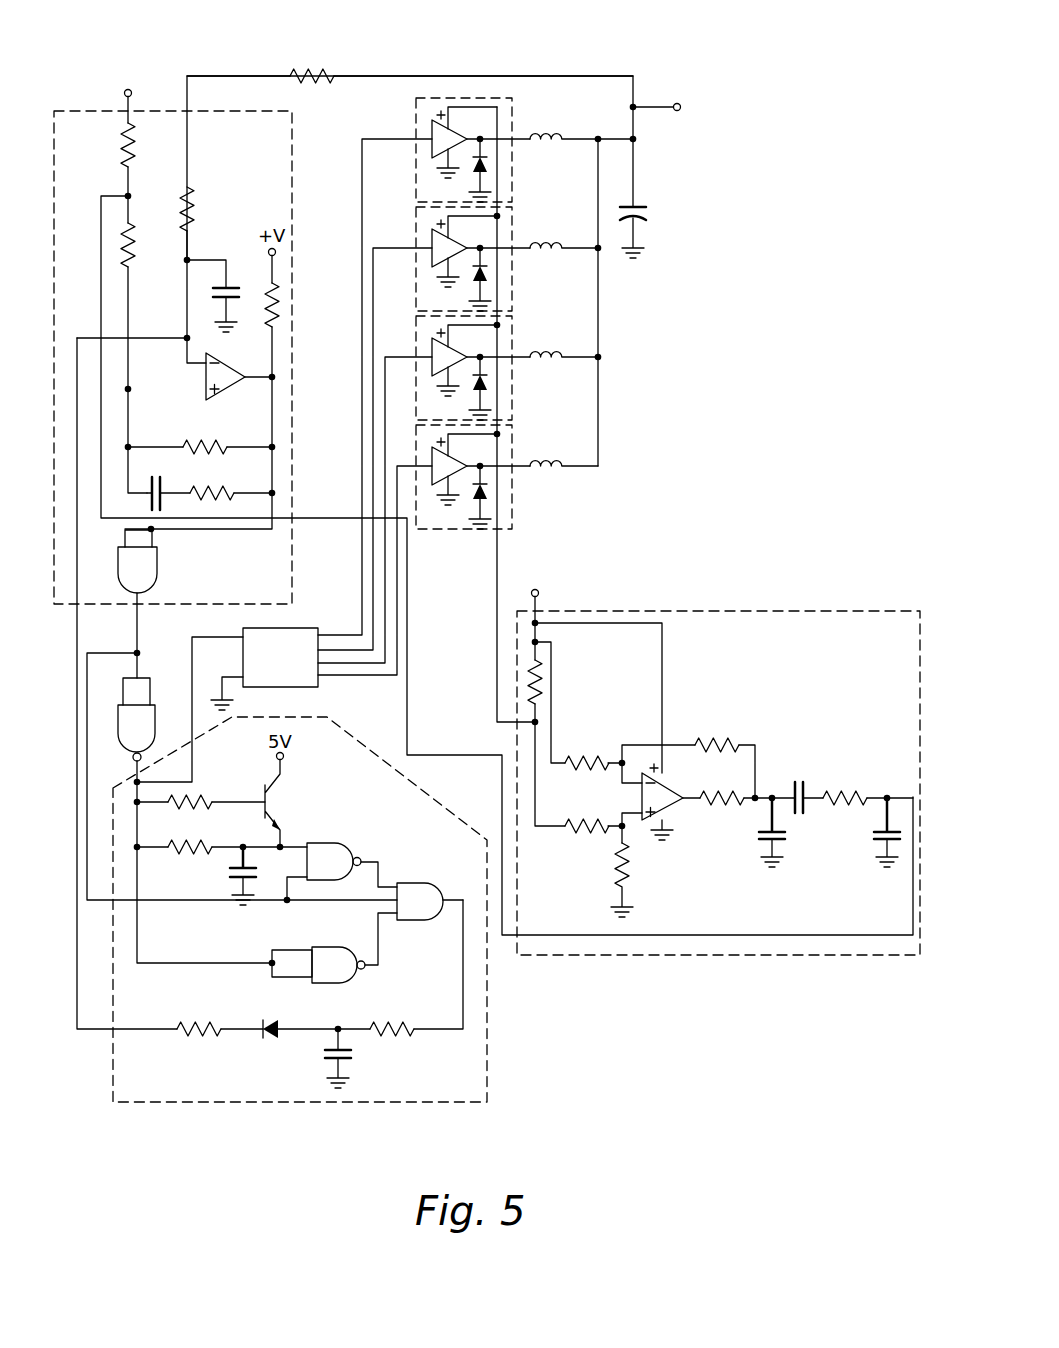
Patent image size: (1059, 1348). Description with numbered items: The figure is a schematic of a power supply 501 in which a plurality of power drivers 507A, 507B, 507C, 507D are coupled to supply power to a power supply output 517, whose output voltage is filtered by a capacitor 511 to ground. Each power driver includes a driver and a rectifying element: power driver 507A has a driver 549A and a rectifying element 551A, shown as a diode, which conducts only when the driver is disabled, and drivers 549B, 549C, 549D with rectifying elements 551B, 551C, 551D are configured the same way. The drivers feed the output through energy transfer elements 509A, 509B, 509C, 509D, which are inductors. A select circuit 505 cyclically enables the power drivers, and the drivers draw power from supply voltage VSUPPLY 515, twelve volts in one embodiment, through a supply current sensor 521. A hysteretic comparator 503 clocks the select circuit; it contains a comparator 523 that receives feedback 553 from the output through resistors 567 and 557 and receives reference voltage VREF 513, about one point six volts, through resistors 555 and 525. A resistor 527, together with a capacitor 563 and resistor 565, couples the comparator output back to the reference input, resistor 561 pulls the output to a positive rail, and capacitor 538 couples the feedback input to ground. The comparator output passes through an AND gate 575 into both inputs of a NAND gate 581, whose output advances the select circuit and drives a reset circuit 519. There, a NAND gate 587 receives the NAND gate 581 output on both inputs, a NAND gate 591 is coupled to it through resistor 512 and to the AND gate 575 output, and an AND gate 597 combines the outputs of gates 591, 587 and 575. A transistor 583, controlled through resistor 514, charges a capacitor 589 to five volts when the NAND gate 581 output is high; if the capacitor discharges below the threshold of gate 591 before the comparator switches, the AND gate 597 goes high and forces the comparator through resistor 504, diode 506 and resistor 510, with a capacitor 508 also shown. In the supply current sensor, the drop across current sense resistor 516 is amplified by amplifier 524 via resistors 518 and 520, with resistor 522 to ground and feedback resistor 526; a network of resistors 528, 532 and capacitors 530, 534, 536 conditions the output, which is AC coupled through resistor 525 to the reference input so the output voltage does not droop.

The power supply 501 is at (716, 46).
The hysteretic comparator 503 is at (292, 188).
The select circuit 505 is at (310, 628).
The power driver 507A is at (512, 160).
The power driver 507B is at (512, 269).
The power driver 507C is at (512, 377).
The power driver 507D is at (512, 487).
The energy transfer element 509A is at (546, 135).
The energy transfer element 509B is at (546, 244).
The energy transfer element 509C is at (546, 353).
The energy transfer element 509D is at (546, 462).
The capacitor 511 is at (646, 216).
The reference voltage VREF 513 is at (124, 93).
The supply voltage VSUPPLY 515 is at (560, 573).
The power supply output 517 is at (677, 112).
The reset circuit 519 is at (487, 1040).
The supply current sensor 521 is at (757, 955).
The comparator 523 is at (206, 398).
The amplifier 524 is at (650, 773).
The resistor 525 is at (128, 246).
The resistor 526 is at (715, 743).
The resistor 527 is at (205, 447).
The resistor 528 is at (720, 803).
The capacitor 530 is at (800, 785).
The resistor 532 is at (845, 795).
The capacitor 534 is at (765, 842).
The capacitor 536 is at (880, 842).
The capacitor 538 is at (227, 285).
The driver 549A is at (430, 130).
The driver 549B is at (432, 240).
The driver 549C is at (432, 350).
The driver 549D is at (432, 458).
The rectifying element 551A is at (474, 166).
The rectifying element 551B is at (474, 276).
The rectifying element 551C is at (474, 384).
The rectifying element 551D is at (474, 500).
The feedback 553 is at (482, 76).
The resistor 555 is at (128, 150).
The resistor 557 is at (187, 212).
The resistor 561 is at (272, 300).
The capacitor 563 is at (150, 500).
The resistor 565 is at (215, 493).
The resistor 567 is at (305, 70).
The AND gate 575 is at (157, 577).
The NAND gate 581 is at (155, 722).
The transistor 583 is at (277, 800).
The NAND gate 587 is at (318, 982).
The capacitor 589 is at (240, 880).
The NAND gate 591 is at (340, 845).
The AND gate 597 is at (410, 883).
The resistor 504 is at (392, 1024).
The diode 506 is at (268, 1036).
The capacitor 508 is at (348, 1056).
The resistor 510 is at (200, 1034).
The resistor 512 is at (195, 850).
The resistor 514 is at (195, 800).
The current sense resistor 516 is at (535, 682).
The resistor 518 is at (587, 760).
The resistor 520 is at (583, 832).
The resistor 522 is at (628, 872).